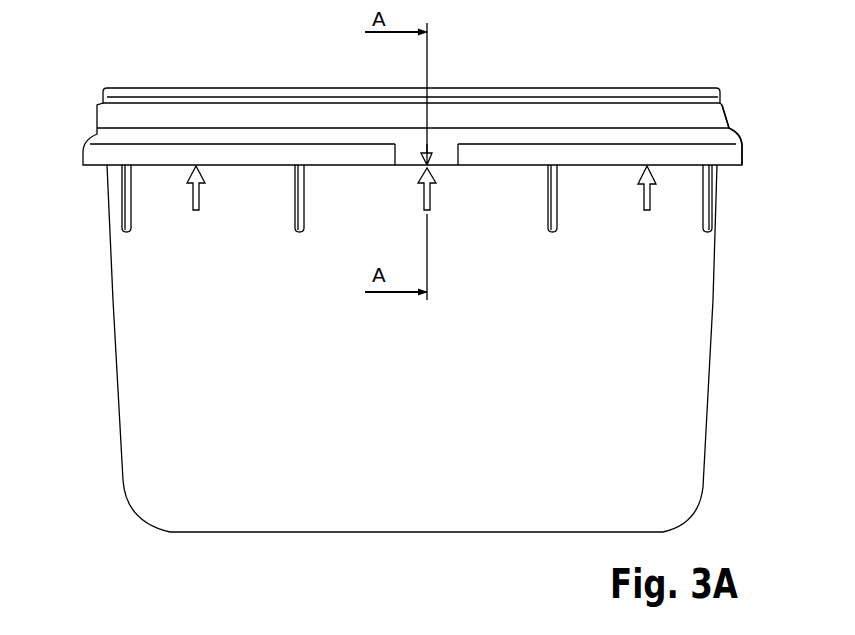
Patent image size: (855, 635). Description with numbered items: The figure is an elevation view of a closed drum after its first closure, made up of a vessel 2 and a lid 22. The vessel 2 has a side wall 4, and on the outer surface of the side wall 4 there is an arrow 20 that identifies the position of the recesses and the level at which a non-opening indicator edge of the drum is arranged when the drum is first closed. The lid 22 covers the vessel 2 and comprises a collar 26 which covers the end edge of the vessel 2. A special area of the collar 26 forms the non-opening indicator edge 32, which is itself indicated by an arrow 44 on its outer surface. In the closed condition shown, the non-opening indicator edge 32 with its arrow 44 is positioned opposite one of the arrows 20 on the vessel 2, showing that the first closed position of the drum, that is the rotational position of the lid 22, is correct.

The vessel 2 is at (412, 280).
The side wall 4 is at (634, 358).
The arrow 20 is at (434, 193).
The lid 22 is at (432, 97).
The collar 26 is at (740, 129).
The non-opening indicator edge 32 is at (411, 172).
The arrow 44 is at (422, 157).